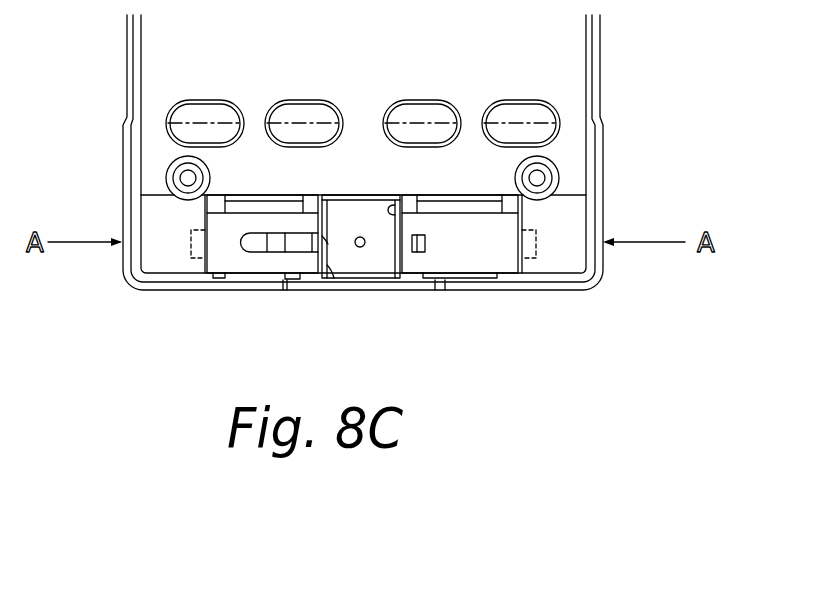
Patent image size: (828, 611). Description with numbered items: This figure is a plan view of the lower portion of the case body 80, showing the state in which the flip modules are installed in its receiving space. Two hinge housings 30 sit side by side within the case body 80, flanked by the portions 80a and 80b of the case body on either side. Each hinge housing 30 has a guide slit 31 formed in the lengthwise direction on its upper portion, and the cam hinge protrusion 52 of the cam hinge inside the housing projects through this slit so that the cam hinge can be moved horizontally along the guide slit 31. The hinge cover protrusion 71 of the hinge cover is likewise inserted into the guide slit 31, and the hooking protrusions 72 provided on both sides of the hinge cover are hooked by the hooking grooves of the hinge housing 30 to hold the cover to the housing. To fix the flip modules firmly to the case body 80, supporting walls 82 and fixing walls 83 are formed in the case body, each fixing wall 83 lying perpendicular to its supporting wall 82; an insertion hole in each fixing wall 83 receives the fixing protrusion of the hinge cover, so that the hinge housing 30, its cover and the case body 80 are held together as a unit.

The case body 80 is at (622, 124).
The left housing block 80a is at (168, 258).
The right housing block 80b is at (558, 258).
The hinge housing 30 is at (255, 268).
The guide slit 31 is at (295, 243).
The cam hinge protrusion 52 is at (255, 242).
The hinge cover protrusion 71 is at (328, 238).
The hooking protrusion 72 is at (412, 243).
The supporting wall 82 is at (262, 200).
The fixing wall 83 is at (392, 205).